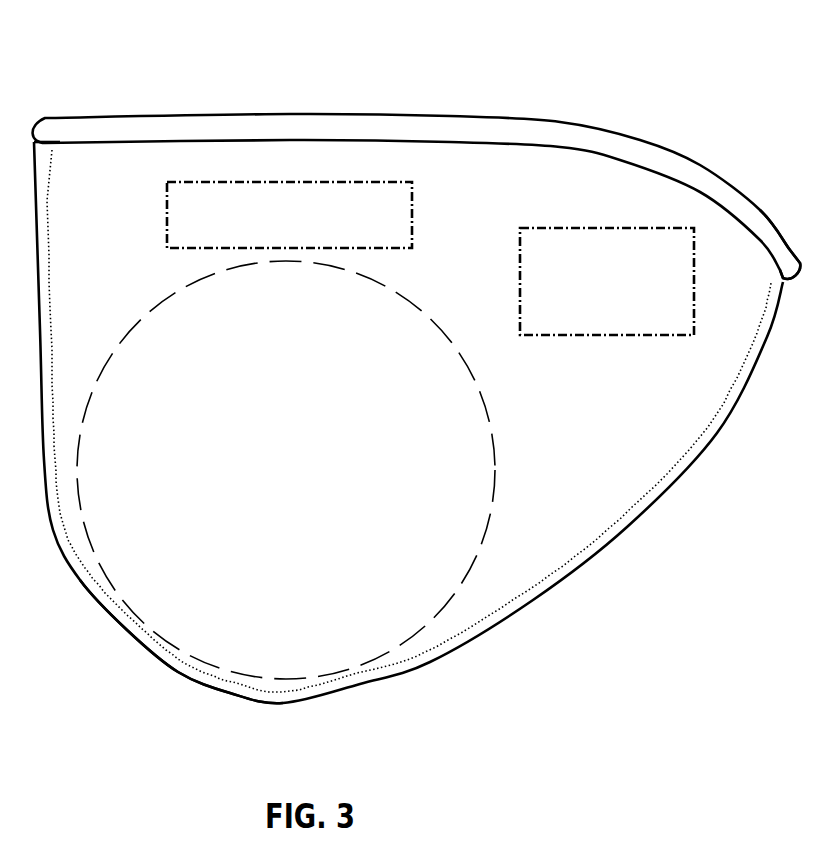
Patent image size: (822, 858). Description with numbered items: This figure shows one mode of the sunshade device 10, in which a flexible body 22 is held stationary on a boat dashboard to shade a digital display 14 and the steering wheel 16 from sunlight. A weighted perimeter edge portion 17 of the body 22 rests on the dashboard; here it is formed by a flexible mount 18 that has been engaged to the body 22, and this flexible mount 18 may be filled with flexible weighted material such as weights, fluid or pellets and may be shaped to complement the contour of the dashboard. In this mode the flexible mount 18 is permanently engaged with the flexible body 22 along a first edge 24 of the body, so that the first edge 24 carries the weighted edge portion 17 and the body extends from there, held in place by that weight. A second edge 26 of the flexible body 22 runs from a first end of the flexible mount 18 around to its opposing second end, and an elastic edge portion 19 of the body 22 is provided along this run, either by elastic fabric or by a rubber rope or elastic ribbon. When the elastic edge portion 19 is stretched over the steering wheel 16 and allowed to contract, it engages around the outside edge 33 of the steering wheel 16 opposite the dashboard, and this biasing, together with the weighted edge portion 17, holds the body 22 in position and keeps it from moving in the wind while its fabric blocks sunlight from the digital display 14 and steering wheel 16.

The device 10 is at (480, 92).
The digital display 14 is at (660, 325).
The steering wheel 16 is at (110, 592).
The weighted perimeter edge portion 17 is at (332, 115).
The flexible mount 18 is at (645, 153).
The elastic edge portion 19 is at (488, 617).
The flexible body 22 is at (555, 457).
The first edge 24 is at (157, 152).
The second edge 26 is at (185, 678).
The outside edge 33 is at (320, 673).